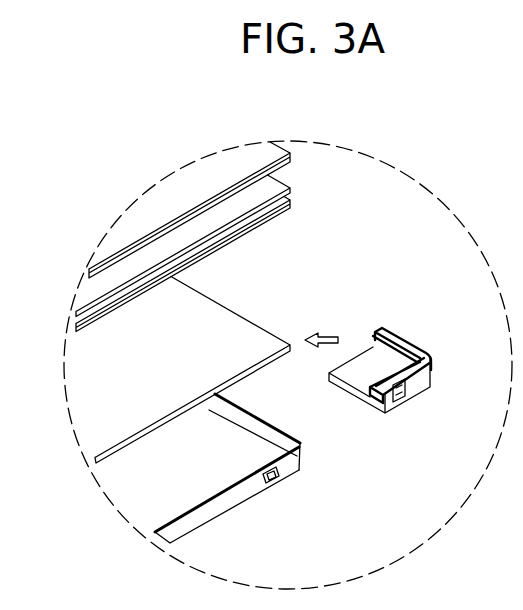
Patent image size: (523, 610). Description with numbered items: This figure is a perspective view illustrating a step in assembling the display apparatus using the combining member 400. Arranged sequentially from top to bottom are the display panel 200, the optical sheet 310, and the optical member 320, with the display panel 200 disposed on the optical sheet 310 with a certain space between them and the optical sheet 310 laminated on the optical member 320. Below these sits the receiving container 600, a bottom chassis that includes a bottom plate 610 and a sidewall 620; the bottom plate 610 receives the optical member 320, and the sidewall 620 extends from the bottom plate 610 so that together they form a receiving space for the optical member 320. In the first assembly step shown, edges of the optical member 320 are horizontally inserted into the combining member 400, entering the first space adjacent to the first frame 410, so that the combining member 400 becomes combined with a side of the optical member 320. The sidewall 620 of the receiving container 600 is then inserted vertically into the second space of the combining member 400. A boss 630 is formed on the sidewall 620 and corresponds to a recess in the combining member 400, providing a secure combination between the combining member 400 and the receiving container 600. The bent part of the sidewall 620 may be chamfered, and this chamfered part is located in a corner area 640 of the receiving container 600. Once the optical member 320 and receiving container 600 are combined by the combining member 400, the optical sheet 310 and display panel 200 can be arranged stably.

The display panel 200 is at (153, 205).
The optical sheet 310 is at (298, 173).
The optical member 320 is at (96, 418).
The combining member 400 is at (361, 341).
The first frame 410 is at (343, 388).
The receiving container 600 is at (242, 470).
The bottom plate 610 is at (143, 490).
The sidewall 620 is at (217, 509).
The boss 630 is at (280, 479).
The corner area 640 is at (302, 447).